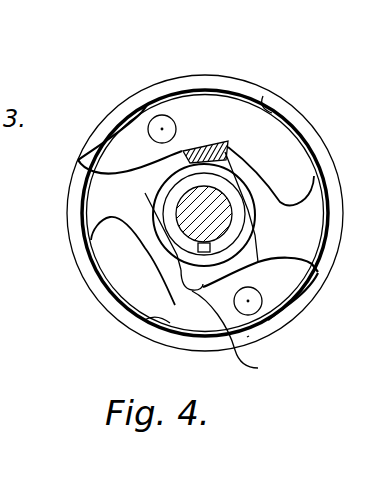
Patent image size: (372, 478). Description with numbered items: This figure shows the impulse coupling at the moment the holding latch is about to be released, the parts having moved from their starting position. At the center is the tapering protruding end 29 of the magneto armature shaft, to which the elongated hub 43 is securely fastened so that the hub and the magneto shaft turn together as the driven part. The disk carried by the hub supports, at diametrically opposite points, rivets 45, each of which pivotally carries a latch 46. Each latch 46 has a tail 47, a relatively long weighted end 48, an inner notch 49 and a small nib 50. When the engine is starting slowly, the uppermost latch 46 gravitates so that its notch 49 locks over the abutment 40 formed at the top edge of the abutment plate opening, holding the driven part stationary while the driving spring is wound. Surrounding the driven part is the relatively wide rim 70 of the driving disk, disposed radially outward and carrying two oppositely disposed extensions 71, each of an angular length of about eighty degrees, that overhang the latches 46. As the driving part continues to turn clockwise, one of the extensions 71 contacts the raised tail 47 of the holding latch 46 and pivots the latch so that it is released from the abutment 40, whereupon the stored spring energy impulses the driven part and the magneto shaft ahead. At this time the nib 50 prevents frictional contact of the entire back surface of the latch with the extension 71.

The tapering protruding end 29 is at (190, 200).
The abutment 40 is at (231, 142).
The elongated hub 43 is at (192, 250).
The rivets 45 is at (247, 337).
The latch 46 is at (172, 100).
The tail 47 is at (78, 162).
The weighted end 48 is at (301, 187).
The inner notch 49 is at (266, 104).
The nib 50 is at (230, 142).
The rim 70 is at (78, 141).
The extensions 71 is at (133, 98).